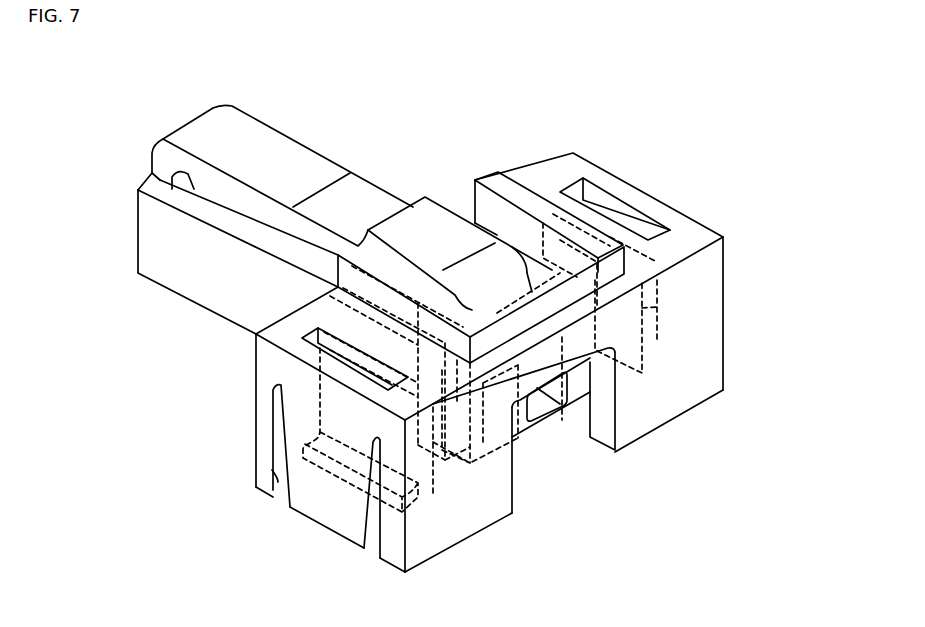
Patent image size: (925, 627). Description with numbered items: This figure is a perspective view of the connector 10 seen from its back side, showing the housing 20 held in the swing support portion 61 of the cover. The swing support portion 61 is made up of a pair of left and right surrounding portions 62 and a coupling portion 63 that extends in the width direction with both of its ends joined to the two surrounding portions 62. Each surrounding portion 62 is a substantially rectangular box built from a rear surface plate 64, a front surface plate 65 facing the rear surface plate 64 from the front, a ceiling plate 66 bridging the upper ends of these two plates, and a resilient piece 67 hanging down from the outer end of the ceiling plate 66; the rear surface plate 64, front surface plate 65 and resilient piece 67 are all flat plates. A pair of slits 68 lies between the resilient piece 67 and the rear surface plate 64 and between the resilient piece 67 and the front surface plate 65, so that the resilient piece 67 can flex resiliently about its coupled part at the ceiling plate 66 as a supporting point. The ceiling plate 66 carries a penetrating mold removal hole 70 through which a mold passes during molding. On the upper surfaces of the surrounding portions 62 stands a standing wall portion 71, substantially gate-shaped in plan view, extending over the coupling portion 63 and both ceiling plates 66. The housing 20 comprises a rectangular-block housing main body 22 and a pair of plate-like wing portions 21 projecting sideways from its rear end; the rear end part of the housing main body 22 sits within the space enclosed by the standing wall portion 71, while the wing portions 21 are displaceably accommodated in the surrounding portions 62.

The connector 10 is at (378, 94).
The housing 20 is at (206, 107).
The wing portion 21 is at (660, 306).
The housing main body 22 is at (150, 234).
The swing support portion 61 is at (577, 150).
The surrounding portion 62 is at (698, 410).
The coupling portion 63 is at (589, 365).
The rear surface plate 64 is at (708, 357).
The front surface plate 65 is at (258, 433).
The ceiling plate 66 is at (686, 237).
The resilient piece 67 is at (320, 508).
The slit 68 is at (275, 467).
The mold removal hole 70 is at (626, 212).
The standing wall portion 71 is at (488, 176).